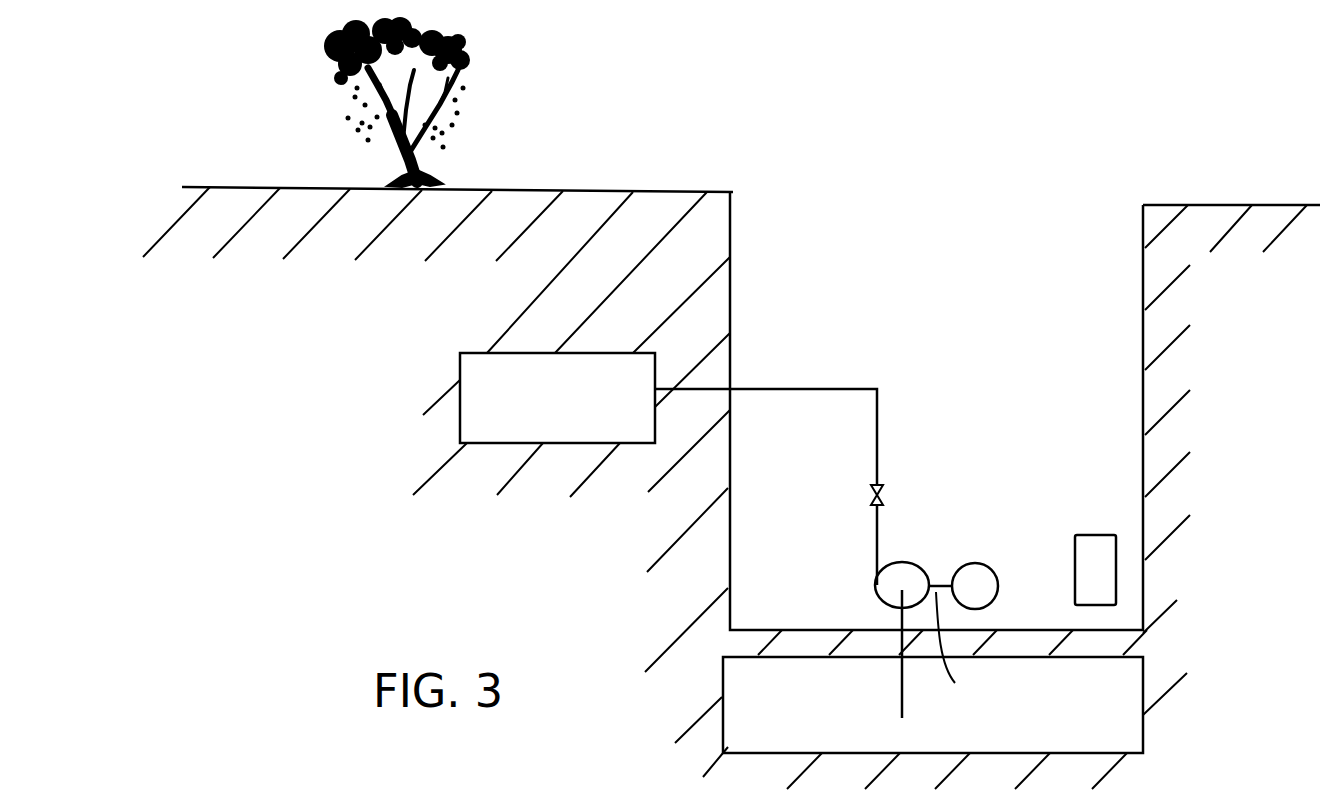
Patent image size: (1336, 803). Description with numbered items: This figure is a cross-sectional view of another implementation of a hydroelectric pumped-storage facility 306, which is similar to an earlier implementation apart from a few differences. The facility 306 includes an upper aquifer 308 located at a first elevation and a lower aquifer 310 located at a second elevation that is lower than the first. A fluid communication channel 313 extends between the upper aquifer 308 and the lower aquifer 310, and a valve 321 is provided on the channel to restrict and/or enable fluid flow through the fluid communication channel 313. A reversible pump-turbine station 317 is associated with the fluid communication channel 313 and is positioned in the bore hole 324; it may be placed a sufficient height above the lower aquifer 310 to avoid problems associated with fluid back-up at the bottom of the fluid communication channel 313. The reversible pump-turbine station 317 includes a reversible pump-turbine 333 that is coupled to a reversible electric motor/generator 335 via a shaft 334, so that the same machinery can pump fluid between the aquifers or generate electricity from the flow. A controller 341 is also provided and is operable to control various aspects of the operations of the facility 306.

The hydroelectric pumped-storage facility 306 is at (347, 322).
The upper aquifer 308 is at (557, 398).
The lower aquifer 310 is at (933, 705).
The fluid communication channel 313 is at (877, 419).
The reversible pump-turbine station 317 is at (922, 549).
The valve 321 is at (872, 503).
The bore hole 324 is at (1009, 180).
The reversible pump-turbine 333 is at (879, 601).
The shaft 334 is at (973, 648).
The reversible electric motor/generator 335 is at (1001, 576).
The controller 341 is at (1100, 545).